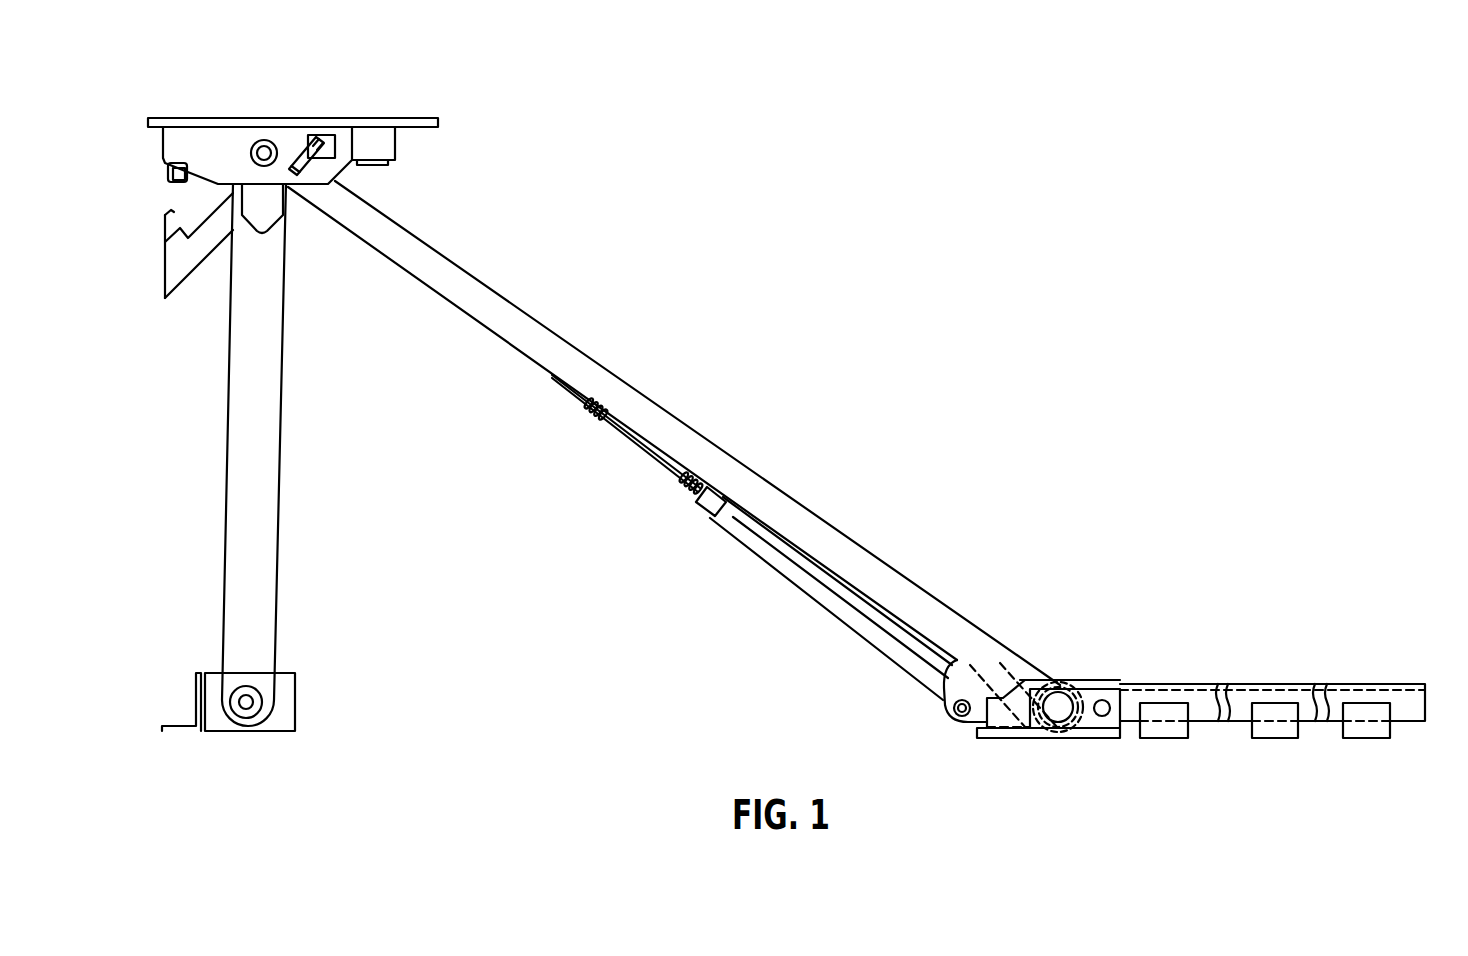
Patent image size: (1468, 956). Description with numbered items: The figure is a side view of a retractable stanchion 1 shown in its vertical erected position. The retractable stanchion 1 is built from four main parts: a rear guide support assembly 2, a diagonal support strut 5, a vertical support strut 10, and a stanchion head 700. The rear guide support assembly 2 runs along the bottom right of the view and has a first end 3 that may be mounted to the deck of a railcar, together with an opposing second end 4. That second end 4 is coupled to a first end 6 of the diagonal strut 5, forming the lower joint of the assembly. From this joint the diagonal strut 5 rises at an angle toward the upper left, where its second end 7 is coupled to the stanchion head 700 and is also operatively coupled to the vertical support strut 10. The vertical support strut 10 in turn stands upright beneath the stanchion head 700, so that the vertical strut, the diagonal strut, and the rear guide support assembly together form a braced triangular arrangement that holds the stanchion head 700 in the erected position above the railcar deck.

The retractable stanchion 1 is at (790, 213).
The rear guide support assembly 2 is at (1244, 672).
The first end 3 is at (1426, 703).
The second end 4 is at (1063, 683).
The diagonal support strut 5 is at (742, 450).
The first end 6 is at (1015, 655).
The second end 7 is at (345, 183).
The vertical support strut 10 is at (203, 402).
The stanchion head 700 is at (280, 134).